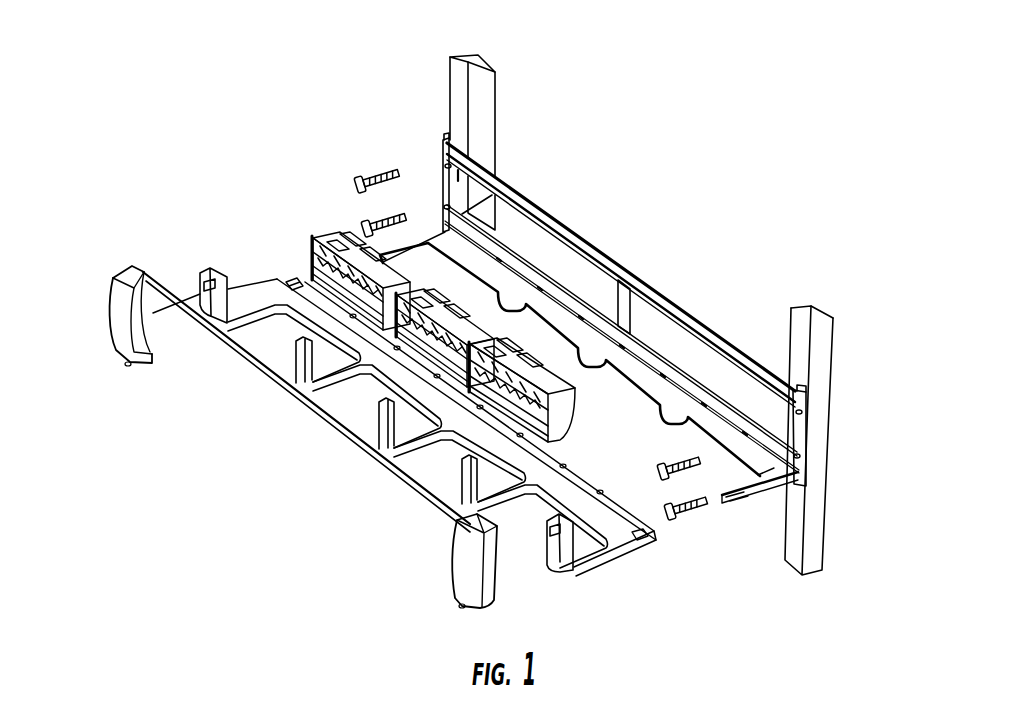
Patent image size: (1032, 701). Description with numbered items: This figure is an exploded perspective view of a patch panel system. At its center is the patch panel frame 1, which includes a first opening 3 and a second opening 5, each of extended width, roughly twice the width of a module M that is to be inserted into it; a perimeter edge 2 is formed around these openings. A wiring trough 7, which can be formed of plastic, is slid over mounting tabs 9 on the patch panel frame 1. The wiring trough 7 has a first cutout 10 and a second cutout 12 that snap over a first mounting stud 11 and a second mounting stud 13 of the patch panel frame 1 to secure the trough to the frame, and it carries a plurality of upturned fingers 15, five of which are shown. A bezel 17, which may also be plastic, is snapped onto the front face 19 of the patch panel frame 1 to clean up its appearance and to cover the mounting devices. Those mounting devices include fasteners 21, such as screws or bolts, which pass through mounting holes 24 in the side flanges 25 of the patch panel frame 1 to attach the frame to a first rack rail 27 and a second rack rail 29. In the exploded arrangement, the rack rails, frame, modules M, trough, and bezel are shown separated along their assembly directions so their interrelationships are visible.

The patch panel frame 1 is at (615, 302).
The perimeter edge 2 is at (563, 285).
The first opening 3 is at (541, 251).
The second opening 5 is at (718, 377).
The wiring trough 7 is at (366, 402).
The mounting tabs 9 is at (422, 240).
The first cutout 10 is at (636, 538).
The first mounting stud 11 is at (795, 482).
The second cutout 12 is at (278, 277).
The second mounting stud 13 is at (416, 244).
The upturned fingers 15 is at (380, 414).
The bezel 17 is at (96, 285).
The front face 19 is at (653, 357).
The fasteners 21 is at (364, 226).
The mounting holes 24 is at (447, 164).
The side flanges 25 is at (445, 140).
The first rack rail 27 is at (488, 90).
The second rack rail 29 is at (797, 335).
The module M is at (304, 210).